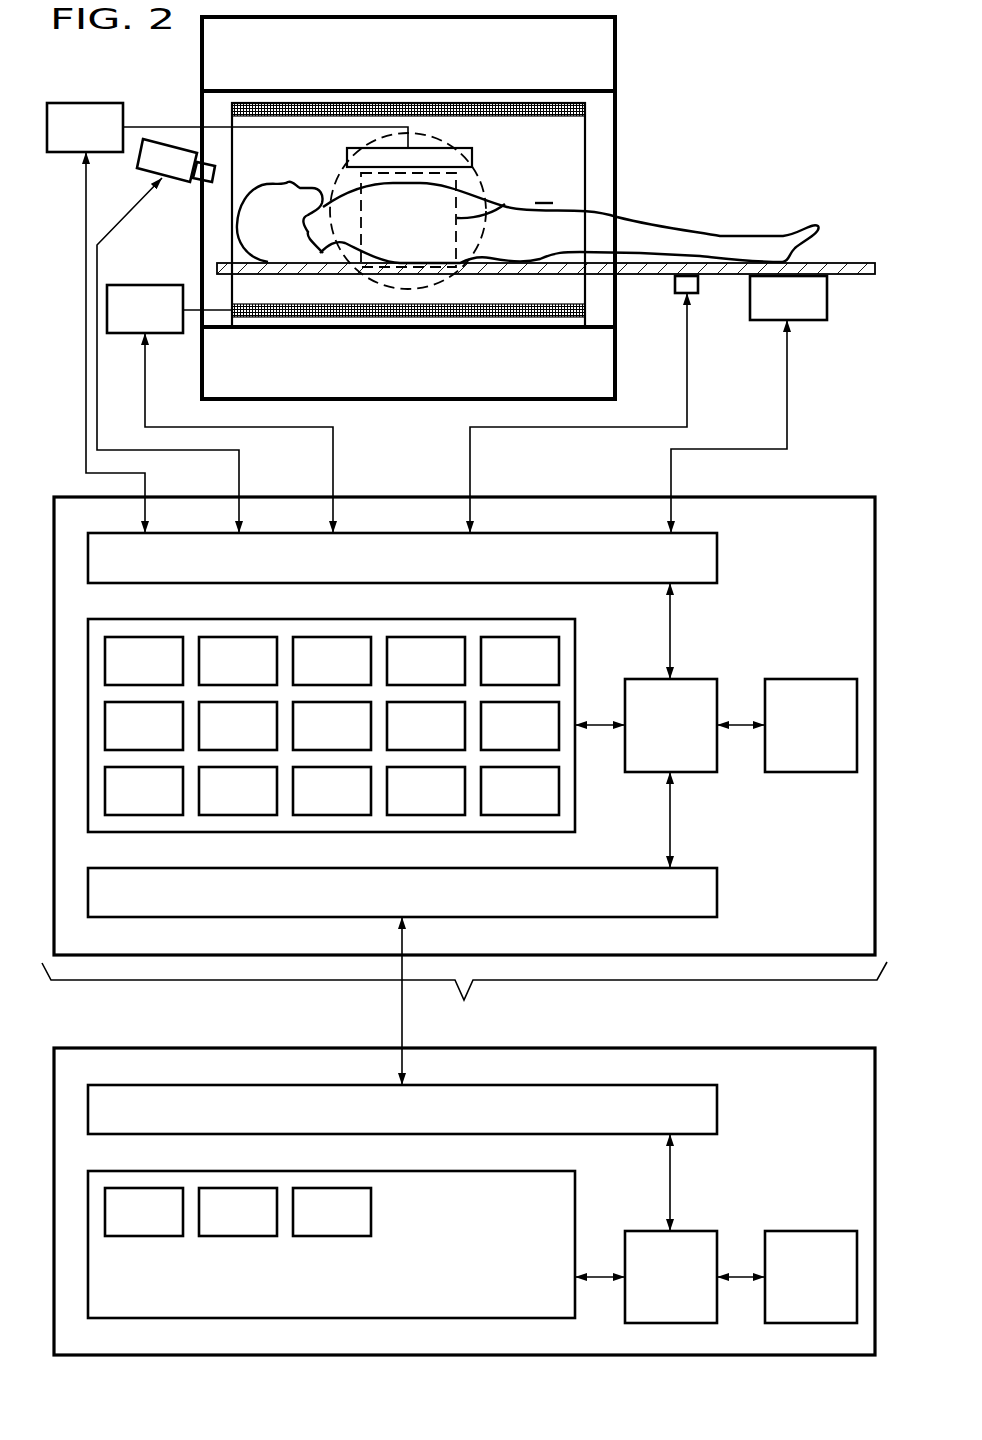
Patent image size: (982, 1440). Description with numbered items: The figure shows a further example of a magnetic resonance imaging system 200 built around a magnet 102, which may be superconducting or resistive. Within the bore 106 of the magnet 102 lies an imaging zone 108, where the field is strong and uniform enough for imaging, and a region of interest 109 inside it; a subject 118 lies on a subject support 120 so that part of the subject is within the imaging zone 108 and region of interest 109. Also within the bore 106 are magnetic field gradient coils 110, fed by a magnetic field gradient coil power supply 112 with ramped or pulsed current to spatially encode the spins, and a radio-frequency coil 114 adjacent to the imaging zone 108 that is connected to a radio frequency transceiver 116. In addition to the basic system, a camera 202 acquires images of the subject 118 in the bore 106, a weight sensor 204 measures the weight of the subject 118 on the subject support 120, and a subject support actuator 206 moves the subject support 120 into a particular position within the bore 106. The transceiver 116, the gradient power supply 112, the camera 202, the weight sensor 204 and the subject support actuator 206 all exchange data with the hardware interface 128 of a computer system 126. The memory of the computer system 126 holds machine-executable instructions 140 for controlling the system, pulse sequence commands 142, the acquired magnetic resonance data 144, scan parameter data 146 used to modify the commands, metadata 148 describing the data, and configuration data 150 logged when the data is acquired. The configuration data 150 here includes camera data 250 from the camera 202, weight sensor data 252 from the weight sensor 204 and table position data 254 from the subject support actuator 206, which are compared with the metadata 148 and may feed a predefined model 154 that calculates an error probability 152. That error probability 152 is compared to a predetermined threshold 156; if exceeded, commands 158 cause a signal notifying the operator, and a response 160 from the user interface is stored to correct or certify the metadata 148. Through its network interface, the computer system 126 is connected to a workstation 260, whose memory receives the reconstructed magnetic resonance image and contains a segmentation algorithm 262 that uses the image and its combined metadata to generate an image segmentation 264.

The magnet 102 is at (617, 60).
The bore 106 is at (592, 149).
The imaging zone 108 is at (332, 184).
The region of interest 109 is at (500, 196).
The magnetic field gradient coils 110 is at (370, 103).
The magnetic field gradient coil power supply 112 is at (167, 325).
The radio-frequency coil 114 is at (472, 163).
The radio frequency transceiver 116 is at (107, 143).
The subject 118 is at (720, 240).
The subject support 120 is at (857, 262).
The computer system 126 is at (835, 562).
The hardware interface 128 is at (424, 572).
The machine-executable instructions 140 is at (166, 676).
The pulse sequence commands 142 is at (260, 676).
The magnetic resonance data 144 is at (354, 676).
The scan parameter data 146 is at (448, 676).
The metadata 148 is at (542, 676).
The configuration data 150 is at (542, 806).
The error probability 152 is at (166, 741).
The predefined model 154 is at (260, 741).
The predetermined threshold 156 is at (354, 741).
The commands 158 is at (448, 741).
The response 160 is at (542, 741).
The magnetic resonance imaging system 200 is at (464, 1001).
The camera 202 is at (173, 182).
The weight sensor 204 is at (698, 292).
The subject support actuator 206 is at (810, 310).
The camera data 250 is at (260, 806).
The weight sensor data 252 is at (354, 806).
The table position data 254 is at (448, 806).
The workstation 260 is at (835, 1110).
The segmentation algorithm 262 is at (260, 1227).
The image segmentation 264 is at (354, 1227).